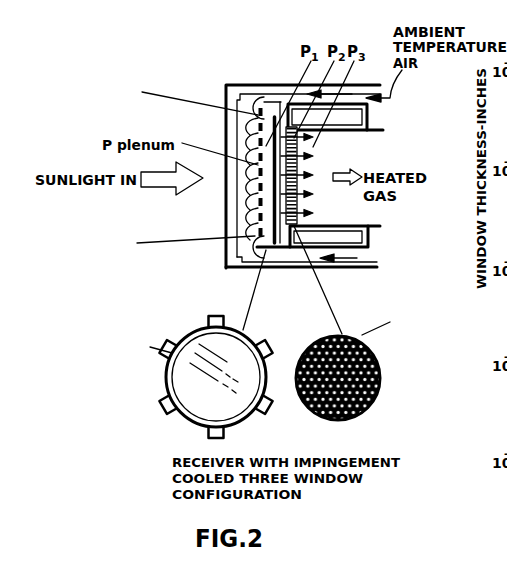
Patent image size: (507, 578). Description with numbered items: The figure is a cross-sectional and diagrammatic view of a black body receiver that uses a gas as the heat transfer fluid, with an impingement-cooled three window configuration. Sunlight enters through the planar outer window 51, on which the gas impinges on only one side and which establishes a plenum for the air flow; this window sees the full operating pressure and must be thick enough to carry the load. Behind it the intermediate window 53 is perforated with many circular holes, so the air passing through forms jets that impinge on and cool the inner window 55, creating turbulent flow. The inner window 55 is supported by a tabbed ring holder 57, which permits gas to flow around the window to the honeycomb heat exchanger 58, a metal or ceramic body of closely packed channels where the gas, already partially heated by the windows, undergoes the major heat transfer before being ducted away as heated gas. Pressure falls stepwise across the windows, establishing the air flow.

The outer window 51 is at (237, 130).
The intermediate window 53 is at (255, 239).
The inner window 55 is at (275, 127).
The tabbed ring holder 57 is at (167, 392).
The honeycomb heat exchanger 58 is at (372, 404).